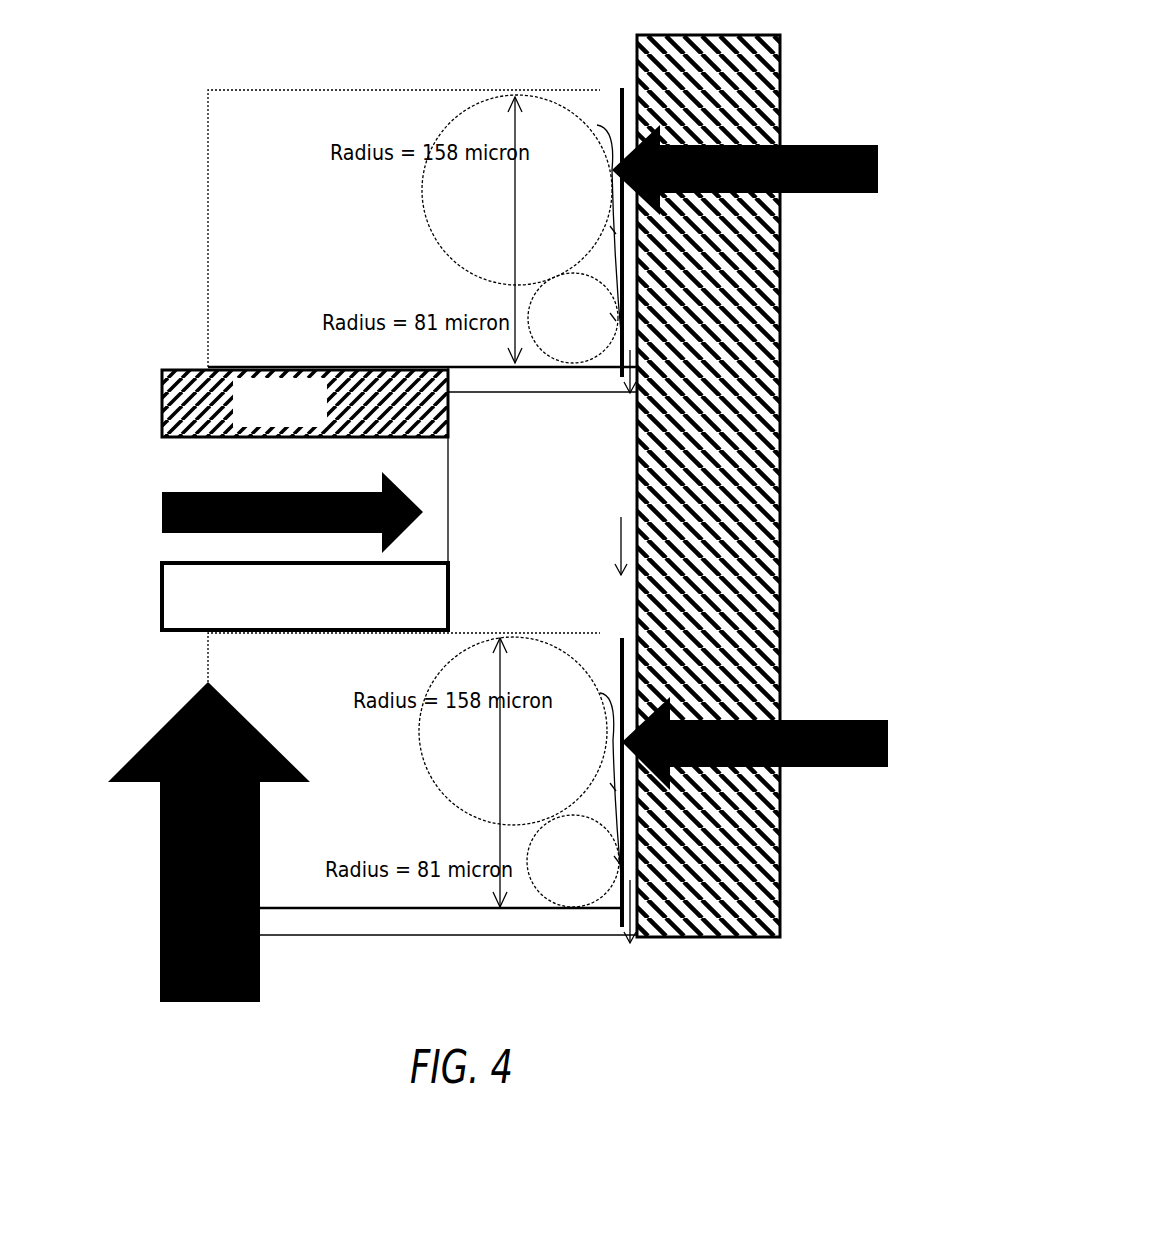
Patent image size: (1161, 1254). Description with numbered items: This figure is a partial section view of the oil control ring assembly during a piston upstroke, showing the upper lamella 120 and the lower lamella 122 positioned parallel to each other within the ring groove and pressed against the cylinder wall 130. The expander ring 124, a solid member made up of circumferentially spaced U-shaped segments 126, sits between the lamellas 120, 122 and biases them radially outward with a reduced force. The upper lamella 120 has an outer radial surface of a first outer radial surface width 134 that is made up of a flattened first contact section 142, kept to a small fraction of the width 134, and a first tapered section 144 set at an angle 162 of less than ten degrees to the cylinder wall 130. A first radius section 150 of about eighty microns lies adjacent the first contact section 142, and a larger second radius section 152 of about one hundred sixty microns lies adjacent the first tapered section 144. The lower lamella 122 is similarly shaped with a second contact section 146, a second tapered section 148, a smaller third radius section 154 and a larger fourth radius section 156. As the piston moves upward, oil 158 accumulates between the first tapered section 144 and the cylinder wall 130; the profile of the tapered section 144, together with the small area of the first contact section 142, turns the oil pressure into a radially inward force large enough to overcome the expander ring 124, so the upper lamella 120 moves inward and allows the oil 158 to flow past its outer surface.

The upper lamella 120 is at (404, 228).
The lower lamella 122 is at (404, 678).
The expander ring 124 is at (292, 504).
The U-shaped segment 126 is at (305, 403).
The cylinder wall 130 is at (701, 486).
The first outer radial surface width 134 is at (515, 248).
The first contact section 142 is at (613, 317).
The first tapered section 144 is at (613, 230).
The second contact section 146 is at (617, 860).
The second tapered section 148 is at (613, 787).
The first radius section 150 is at (607, 350).
The second radius section 152 is at (587, 133).
The third radius section 154 is at (612, 888).
The fourth radius section 156 is at (580, 670).
The oil 158 is at (613, 135).
The angle 162 is at (608, 158).